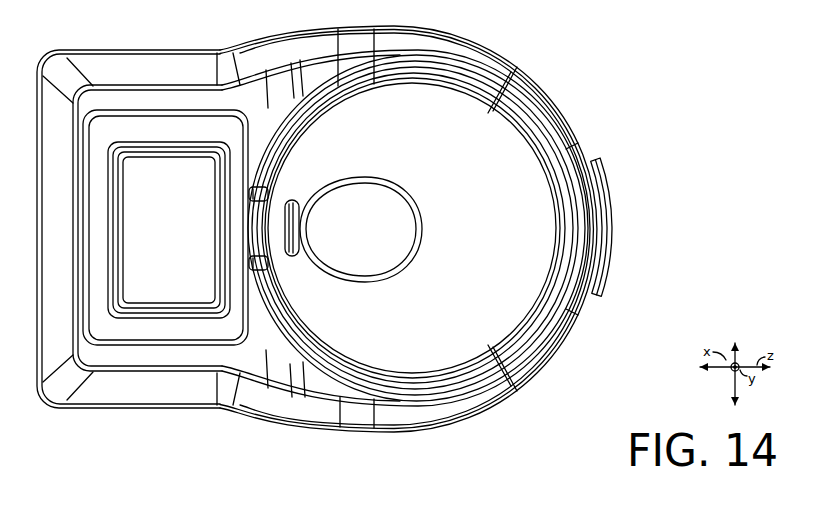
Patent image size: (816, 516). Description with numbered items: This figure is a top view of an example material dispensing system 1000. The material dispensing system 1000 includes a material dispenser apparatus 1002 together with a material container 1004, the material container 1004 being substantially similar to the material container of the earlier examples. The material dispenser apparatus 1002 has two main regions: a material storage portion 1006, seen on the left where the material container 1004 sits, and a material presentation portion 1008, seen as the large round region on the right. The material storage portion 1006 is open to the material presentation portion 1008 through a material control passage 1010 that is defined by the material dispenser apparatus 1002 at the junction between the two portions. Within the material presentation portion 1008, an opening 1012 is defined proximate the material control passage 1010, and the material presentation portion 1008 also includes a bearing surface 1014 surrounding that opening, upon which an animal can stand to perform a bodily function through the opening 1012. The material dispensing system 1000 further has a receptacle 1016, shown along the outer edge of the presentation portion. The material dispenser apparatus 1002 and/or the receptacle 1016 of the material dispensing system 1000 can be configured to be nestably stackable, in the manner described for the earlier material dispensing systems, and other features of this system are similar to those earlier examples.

The material dispensing system 1000 is at (110, 28).
The material dispenser apparatus 1002 is at (575, 90).
The material container 1004 is at (169, 230).
The material storage portion 1006 is at (277, 434).
The material presentation portion 1008 is at (489, 434).
The material control passage 1010 is at (274, 203).
The opening 1012 is at (361, 229).
The bearing surface 1014 is at (412, 228).
The receptacle 1016 is at (611, 214).